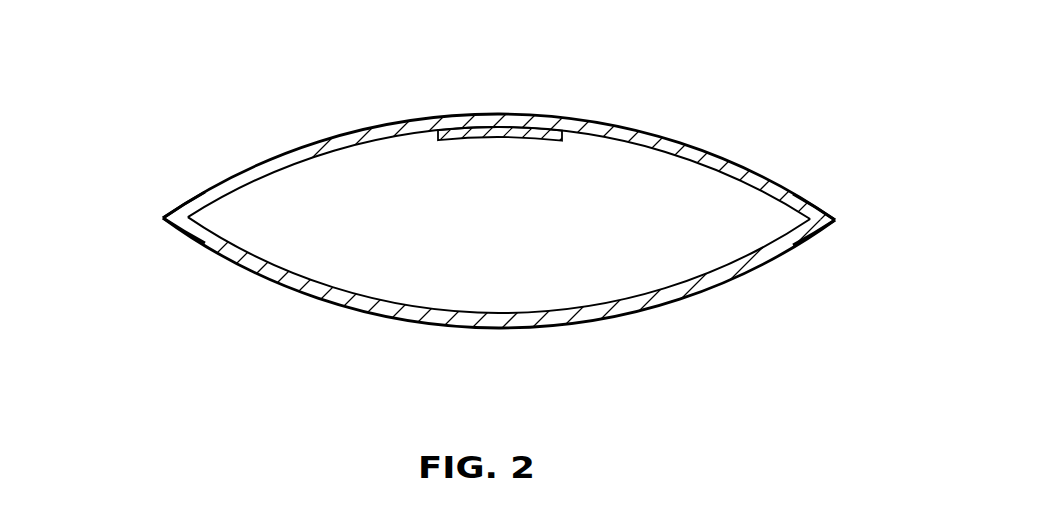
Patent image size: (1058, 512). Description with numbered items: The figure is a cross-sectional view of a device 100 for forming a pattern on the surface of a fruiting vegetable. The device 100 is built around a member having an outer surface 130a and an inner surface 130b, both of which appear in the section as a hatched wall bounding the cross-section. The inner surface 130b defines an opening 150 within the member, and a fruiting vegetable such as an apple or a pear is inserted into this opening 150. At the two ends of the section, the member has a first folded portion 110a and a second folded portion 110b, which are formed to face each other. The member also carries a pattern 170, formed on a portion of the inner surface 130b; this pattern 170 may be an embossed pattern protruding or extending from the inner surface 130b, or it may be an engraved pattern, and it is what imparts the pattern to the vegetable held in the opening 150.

The device for forming a pattern on a surface of a fruiting vegetable 100 is at (194, 128).
The first folded portion 110a is at (163, 218).
The second folded portion 110b is at (835, 220).
The outer surface 130a is at (627, 314).
The inner surface 130b is at (655, 160).
The opening 150 is at (306, 206).
The pattern 170 is at (476, 129).